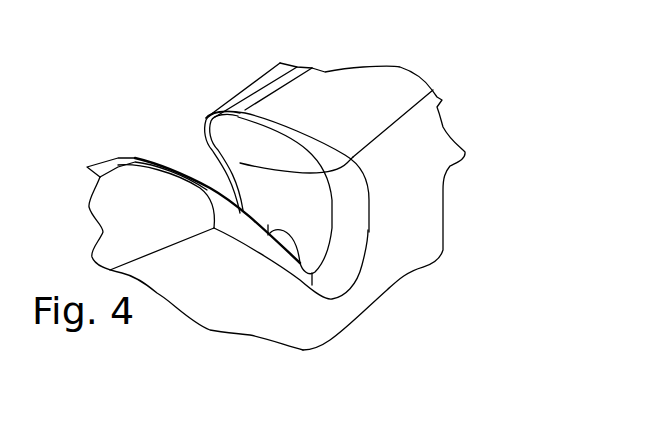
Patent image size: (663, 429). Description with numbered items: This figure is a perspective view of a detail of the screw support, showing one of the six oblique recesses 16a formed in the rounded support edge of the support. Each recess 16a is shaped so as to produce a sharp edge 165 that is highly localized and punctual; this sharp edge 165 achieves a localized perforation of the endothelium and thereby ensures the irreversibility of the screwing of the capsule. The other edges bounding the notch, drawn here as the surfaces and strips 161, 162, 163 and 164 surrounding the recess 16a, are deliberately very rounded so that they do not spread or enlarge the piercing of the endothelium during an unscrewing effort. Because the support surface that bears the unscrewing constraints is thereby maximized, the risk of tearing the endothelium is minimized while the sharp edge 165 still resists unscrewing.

The base portion 161 is at (298, 265).
The body wall 162 is at (320, 233).
The strip band 163 is at (238, 123).
The side plate 164 is at (118, 158).
The sharp edge 165 is at (234, 114).
The recess 16a is at (186, 109).